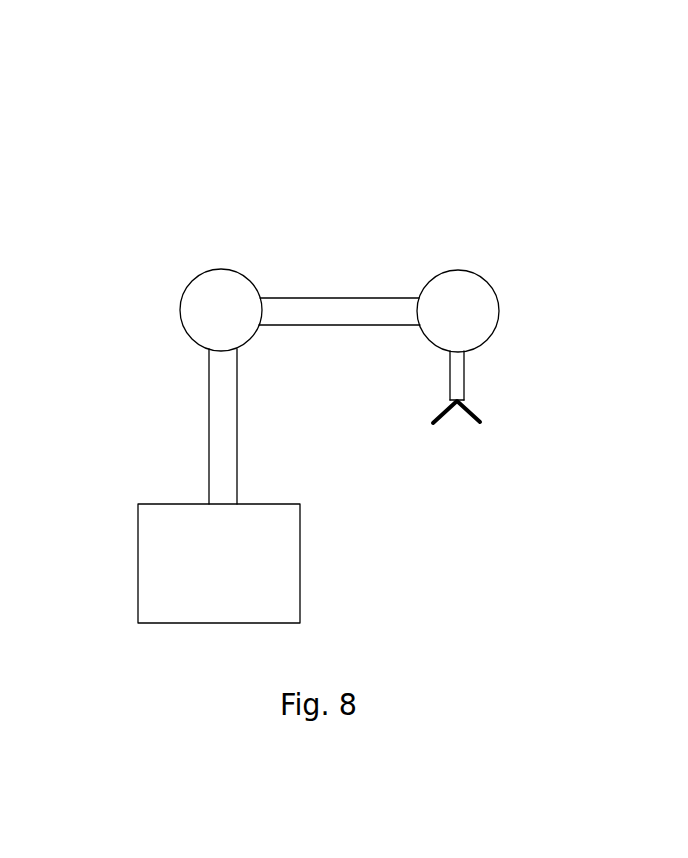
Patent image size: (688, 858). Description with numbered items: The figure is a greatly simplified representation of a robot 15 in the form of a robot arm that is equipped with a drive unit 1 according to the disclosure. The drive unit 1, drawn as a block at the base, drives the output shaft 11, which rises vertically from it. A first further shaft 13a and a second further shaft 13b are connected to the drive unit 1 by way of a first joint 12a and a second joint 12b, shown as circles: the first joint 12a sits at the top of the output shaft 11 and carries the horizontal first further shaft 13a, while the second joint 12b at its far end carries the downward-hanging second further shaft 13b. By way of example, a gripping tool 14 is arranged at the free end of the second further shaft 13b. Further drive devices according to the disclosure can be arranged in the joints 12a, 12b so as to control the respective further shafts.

The drive unit 1 is at (158, 580).
The output shaft 11 is at (220, 445).
The first joint 12a is at (212, 320).
The second joint 12b is at (483, 295).
The first further shaft 13a is at (338, 310).
The second further shaft 13b is at (457, 376).
The gripping tool 14 is at (482, 424).
The robot 15 is at (523, 95).